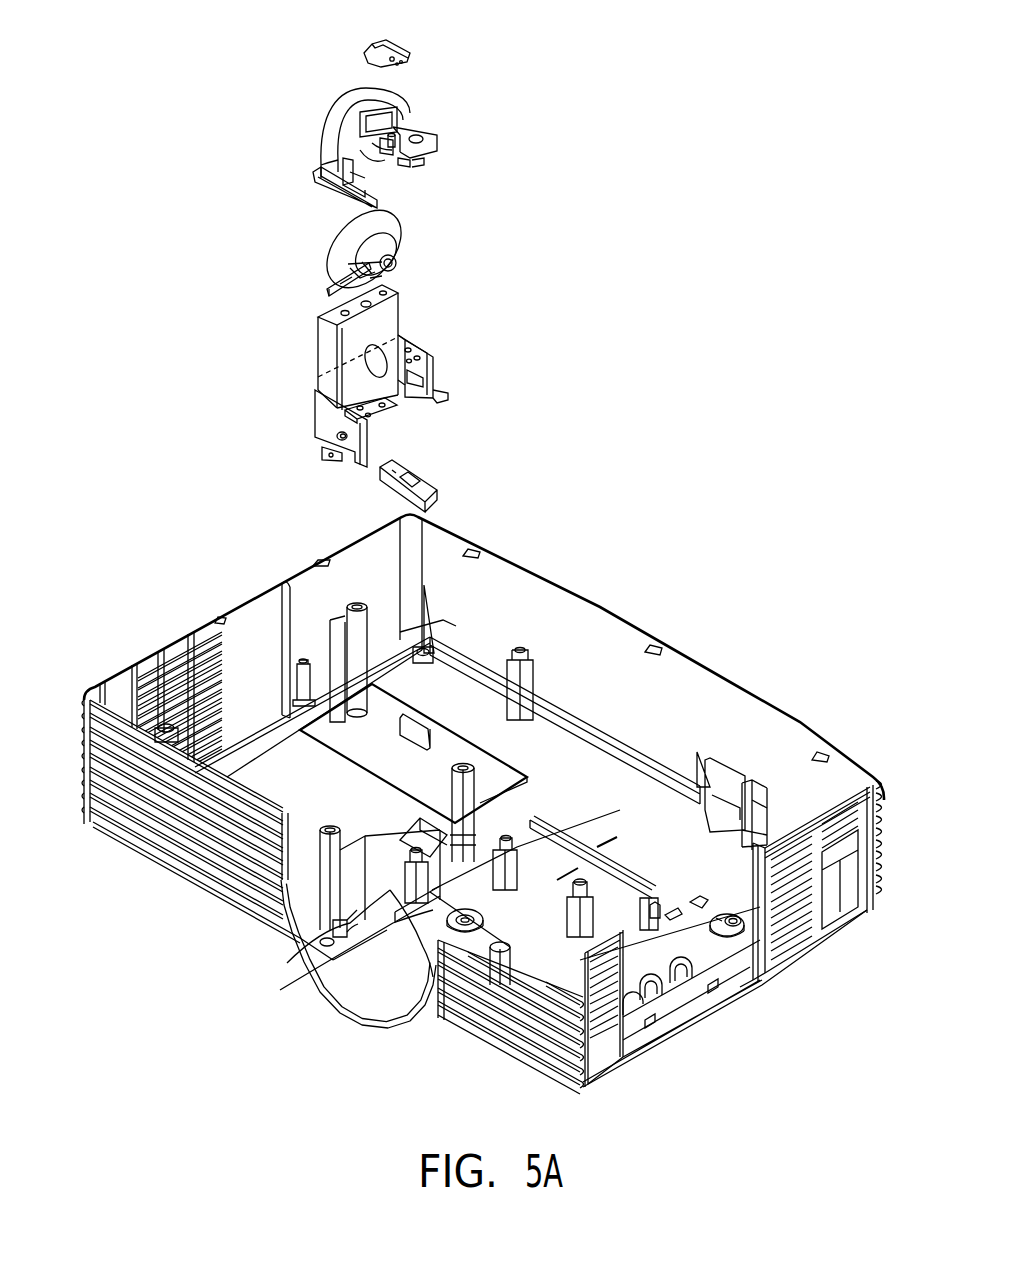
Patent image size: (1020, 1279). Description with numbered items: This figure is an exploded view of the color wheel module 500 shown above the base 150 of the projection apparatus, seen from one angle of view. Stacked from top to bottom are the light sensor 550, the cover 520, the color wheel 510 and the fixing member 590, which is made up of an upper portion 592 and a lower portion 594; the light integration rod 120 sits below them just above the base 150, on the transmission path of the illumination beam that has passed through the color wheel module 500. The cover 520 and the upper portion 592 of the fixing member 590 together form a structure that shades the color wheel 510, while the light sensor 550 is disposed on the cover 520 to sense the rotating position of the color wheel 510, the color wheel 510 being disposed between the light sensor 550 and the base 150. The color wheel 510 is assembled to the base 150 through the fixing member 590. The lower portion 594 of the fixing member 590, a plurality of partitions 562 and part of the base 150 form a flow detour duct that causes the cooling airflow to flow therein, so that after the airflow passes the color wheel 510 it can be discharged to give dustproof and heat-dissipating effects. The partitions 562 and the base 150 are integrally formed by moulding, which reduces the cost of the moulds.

The color wheel module 500 is at (523, 63).
The light sensor 550 is at (385, 47).
The cover 520 is at (397, 120).
The color wheel 510 is at (390, 225).
The fixing member 590 is at (232, 338).
The upper portion 592 is at (327, 350).
The lower portion 594 is at (325, 413).
The light integration rod 120 is at (427, 487).
The base 150 is at (545, 867).
The partitions 562 is at (430, 975).